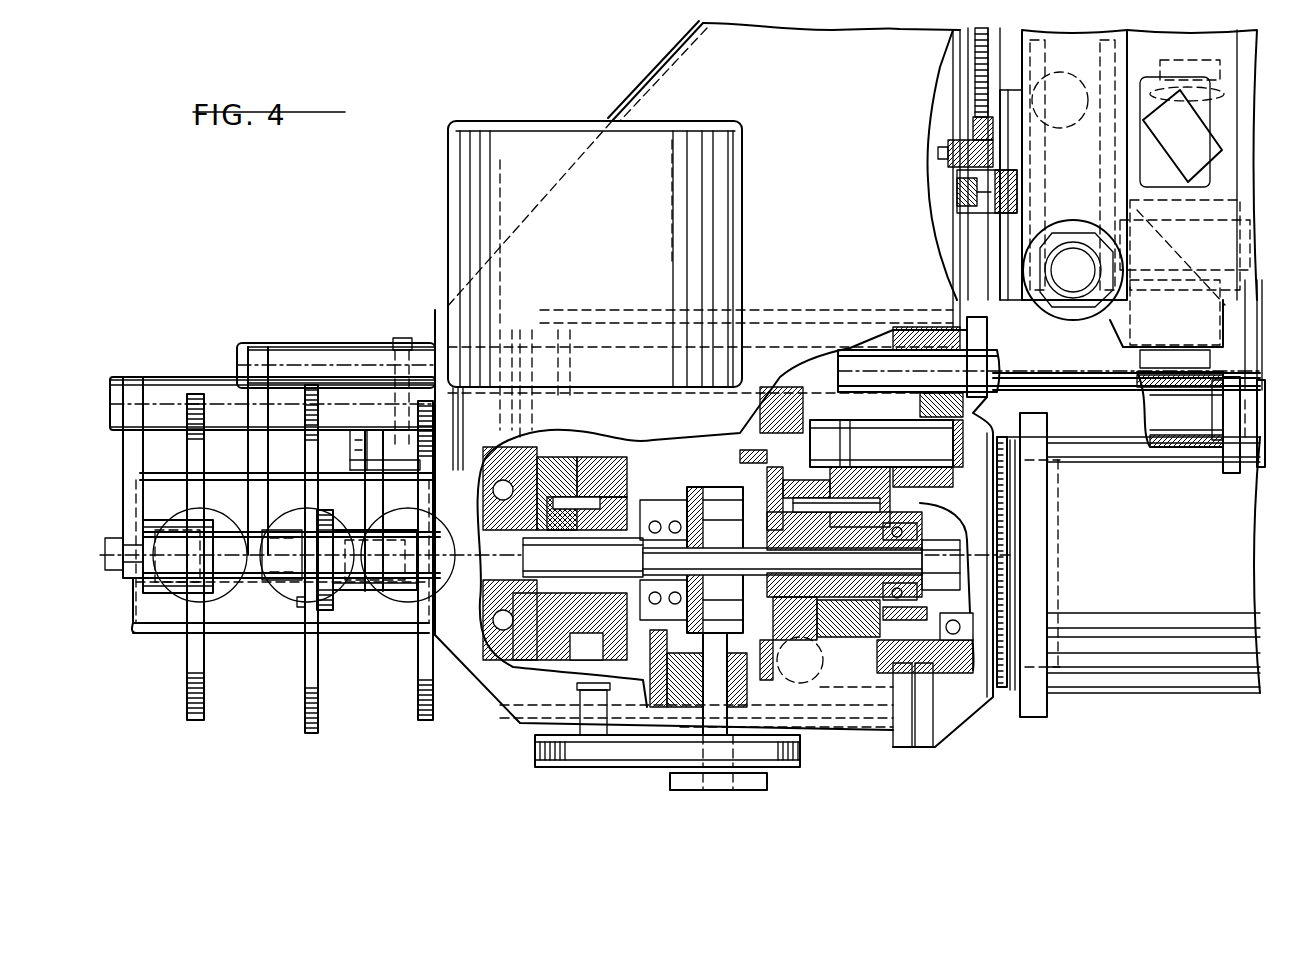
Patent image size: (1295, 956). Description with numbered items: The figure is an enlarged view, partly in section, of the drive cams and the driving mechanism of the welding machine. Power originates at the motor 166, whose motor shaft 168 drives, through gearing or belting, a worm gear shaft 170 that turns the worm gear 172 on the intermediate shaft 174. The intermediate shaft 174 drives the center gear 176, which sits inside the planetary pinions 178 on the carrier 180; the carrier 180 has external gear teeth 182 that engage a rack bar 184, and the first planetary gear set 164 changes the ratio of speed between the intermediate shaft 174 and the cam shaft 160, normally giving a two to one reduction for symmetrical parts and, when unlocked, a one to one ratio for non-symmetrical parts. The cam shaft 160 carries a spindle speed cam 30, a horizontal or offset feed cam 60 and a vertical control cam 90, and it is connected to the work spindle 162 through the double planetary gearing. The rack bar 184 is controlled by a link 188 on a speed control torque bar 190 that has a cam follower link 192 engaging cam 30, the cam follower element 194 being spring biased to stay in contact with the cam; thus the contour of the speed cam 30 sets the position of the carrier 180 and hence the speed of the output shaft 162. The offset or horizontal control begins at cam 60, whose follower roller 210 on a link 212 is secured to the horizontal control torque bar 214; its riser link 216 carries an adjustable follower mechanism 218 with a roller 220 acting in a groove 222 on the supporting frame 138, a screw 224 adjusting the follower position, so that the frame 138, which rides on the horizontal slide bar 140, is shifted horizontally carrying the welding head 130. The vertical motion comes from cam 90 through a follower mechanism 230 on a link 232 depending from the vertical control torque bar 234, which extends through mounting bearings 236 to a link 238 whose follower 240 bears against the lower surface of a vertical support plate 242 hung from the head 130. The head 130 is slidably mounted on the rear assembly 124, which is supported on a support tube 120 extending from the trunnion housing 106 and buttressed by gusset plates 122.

The spindle speed cam 30 is at (433, 697).
The horizontal or offset feed cam 60 is at (313, 682).
The vertical control cam 90 is at (197, 655).
The trunnion housing 106 is at (1128, 565).
The support tube 120 is at (935, 700).
The gusset plates 122 is at (955, 722).
The rear assembly 124 is at (424, 328).
The welding head arm 130 is at (1248, 46).
The frame 138 is at (1090, 46).
The horizontal slide bar 140 is at (1073, 296).
The cam shaft 160 is at (237, 572).
The work spindle 162 is at (970, 519).
The first planetary gear set 164 is at (555, 463).
The motor 166 is at (595, 254).
The motor shaft 168 is at (590, 770).
The worm gear shaft 170 is at (780, 770).
The worm gear 172 is at (707, 493).
The intermediate shaft 174 is at (722, 557).
The center gear 176 is at (820, 688).
The planetary pinions 178 is at (800, 487).
The carrier 180 is at (925, 702).
The external gear teeth 182 is at (800, 660).
The rack bar 184 is at (777, 670).
The link 188 is at (860, 438).
The speed control torque bar 190 is at (355, 448).
The cam follower link 192 is at (380, 512).
The cam follower element 194 is at (410, 588).
The follower roller 210 is at (300, 510).
The link 212 is at (255, 467).
The horizontal control torque bar 214 is at (342, 353).
The riser link 216 is at (973, 228).
The adjustable follower mechanism 218 is at (950, 167).
The roller 220 is at (1007, 189).
The groove 222 is at (1013, 253).
The screw 224 is at (983, 36).
The follower mechanism 230 is at (185, 507).
The link 232 is at (128, 476).
The vertical control torque bar 234 is at (175, 390).
The mounting bearings 236 is at (1160, 432).
The link 238 is at (1227, 448).
The follower 240 is at (1247, 454).
The vertical support plate 242 is at (1258, 462).